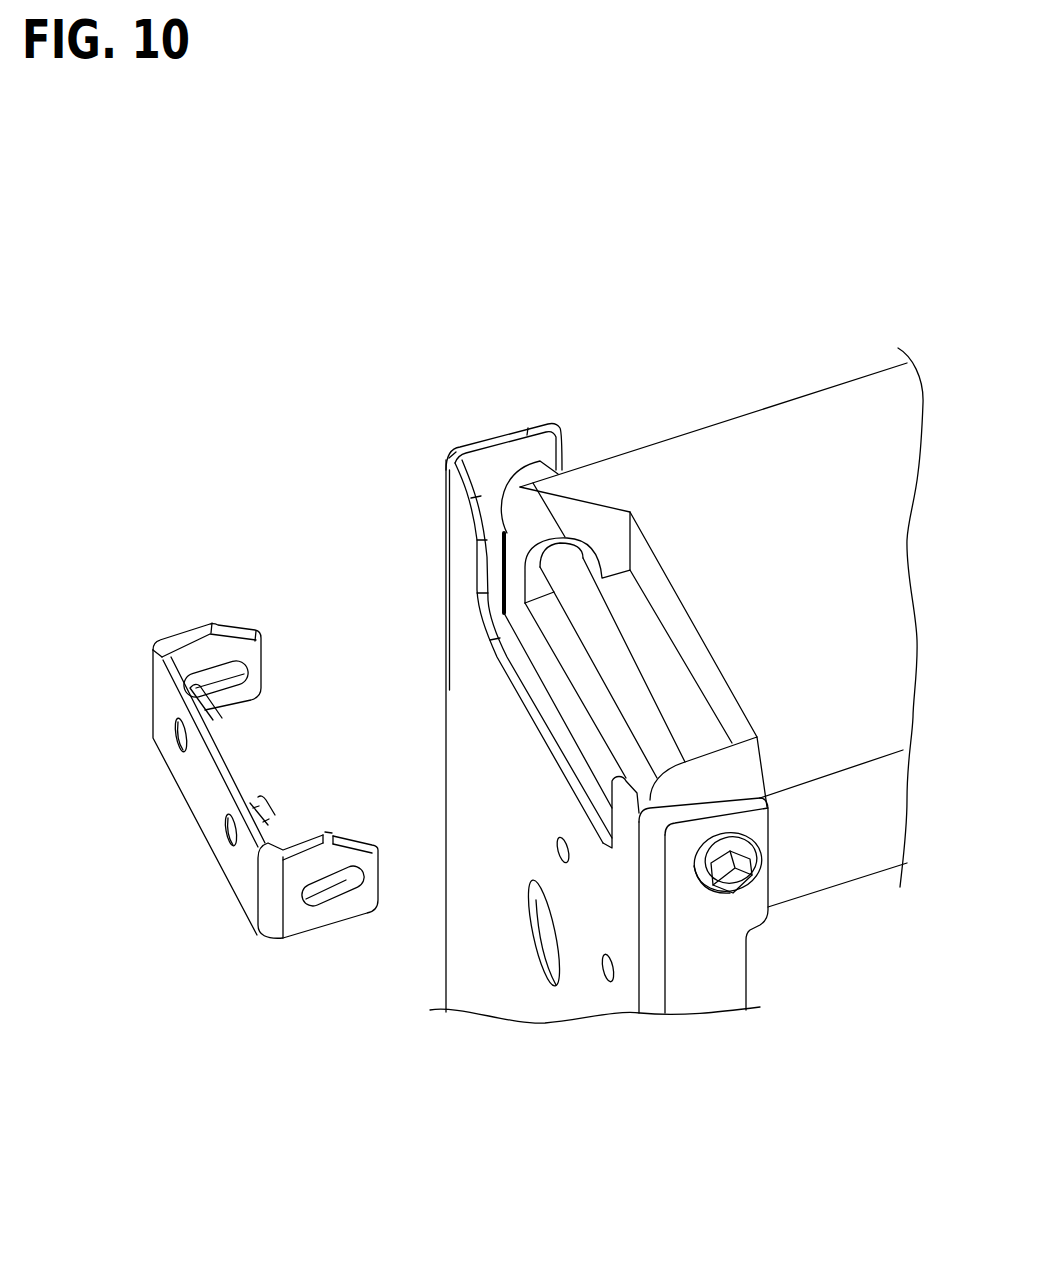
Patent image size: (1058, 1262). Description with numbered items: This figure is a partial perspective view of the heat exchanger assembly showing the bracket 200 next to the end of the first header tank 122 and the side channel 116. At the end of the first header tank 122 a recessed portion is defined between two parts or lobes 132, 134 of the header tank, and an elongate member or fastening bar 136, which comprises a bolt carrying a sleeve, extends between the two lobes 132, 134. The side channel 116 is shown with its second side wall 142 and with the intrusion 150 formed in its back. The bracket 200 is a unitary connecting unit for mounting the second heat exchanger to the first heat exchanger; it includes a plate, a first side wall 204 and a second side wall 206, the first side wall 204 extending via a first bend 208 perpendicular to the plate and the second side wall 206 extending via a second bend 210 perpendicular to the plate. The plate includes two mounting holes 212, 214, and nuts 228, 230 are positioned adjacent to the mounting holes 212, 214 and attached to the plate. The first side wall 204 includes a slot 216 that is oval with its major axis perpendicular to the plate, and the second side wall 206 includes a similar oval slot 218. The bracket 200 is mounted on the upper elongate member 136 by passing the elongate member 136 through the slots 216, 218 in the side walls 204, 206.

The side channel 116 is at (458, 547).
The first header tank 122 is at (787, 440).
The part or lobe 132 is at (570, 494).
The part or lobe 134 is at (767, 753).
The elongate member or fastening bar 136 is at (578, 590).
The second side wall 142 is at (488, 442).
The intrusion 150 is at (503, 667).
The bracket 200 is at (202, 814).
The first side wall 204 is at (183, 613).
The second side wall 206 is at (315, 954).
The first bend 208 is at (153, 652).
The second bend 210 is at (267, 917).
The mounting hole 212 is at (183, 747).
The mounting hole 214 is at (233, 843).
The slot 216 is at (240, 660).
The slot 218 is at (333, 910).
The nut 228 is at (203, 715).
The nut 230 is at (250, 800).